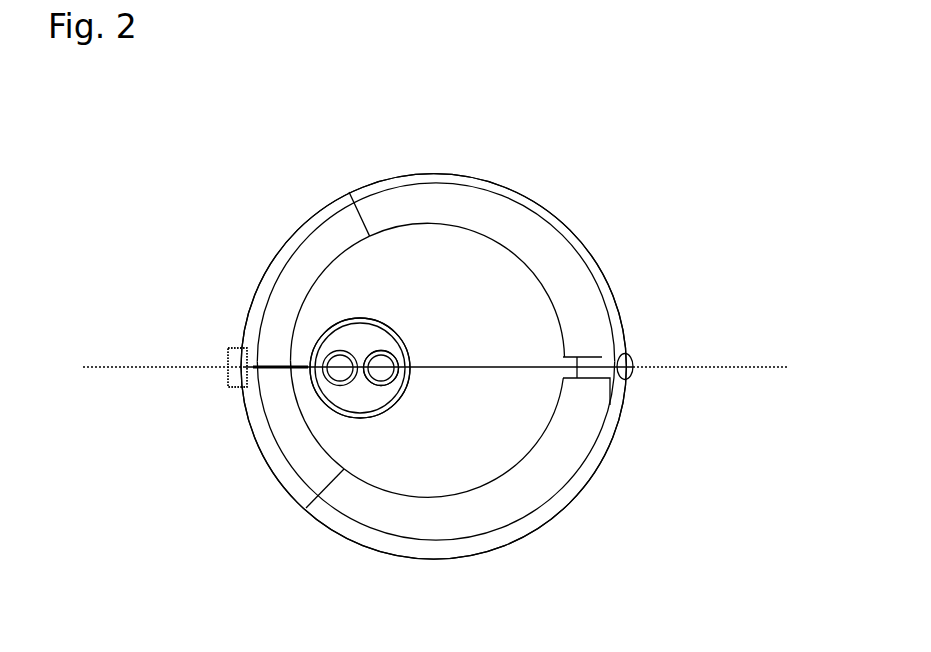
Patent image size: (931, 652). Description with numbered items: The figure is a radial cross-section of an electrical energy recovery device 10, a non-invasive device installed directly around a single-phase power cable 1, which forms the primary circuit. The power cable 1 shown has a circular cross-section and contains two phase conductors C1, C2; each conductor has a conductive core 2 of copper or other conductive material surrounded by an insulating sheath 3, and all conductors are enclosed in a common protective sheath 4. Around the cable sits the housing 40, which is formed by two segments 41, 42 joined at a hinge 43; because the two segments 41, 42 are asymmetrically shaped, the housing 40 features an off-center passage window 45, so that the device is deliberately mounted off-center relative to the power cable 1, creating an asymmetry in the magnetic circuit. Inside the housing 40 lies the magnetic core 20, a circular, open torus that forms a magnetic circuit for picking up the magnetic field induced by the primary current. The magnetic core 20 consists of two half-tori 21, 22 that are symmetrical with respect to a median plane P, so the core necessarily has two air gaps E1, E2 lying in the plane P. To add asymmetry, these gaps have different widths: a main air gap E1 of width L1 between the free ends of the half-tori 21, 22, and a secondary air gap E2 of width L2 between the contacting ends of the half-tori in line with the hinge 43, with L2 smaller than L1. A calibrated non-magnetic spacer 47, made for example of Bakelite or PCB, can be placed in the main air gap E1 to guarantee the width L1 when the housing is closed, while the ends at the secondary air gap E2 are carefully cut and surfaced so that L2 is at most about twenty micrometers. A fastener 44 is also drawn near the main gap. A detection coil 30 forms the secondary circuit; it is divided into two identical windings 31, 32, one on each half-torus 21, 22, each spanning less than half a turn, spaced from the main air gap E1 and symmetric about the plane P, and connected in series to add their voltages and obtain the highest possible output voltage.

The power cable 1 is at (393, 329).
The conductive core 2 is at (386, 372).
The insulating sheath 3 is at (397, 346).
The protective sheath 4 is at (357, 333).
The electrical energy recovery device 10 is at (596, 225).
The magnetic core 20 is at (274, 414).
The half-torus 21 is at (287, 288).
The half-torus 22 is at (287, 440).
The detection coil 30 is at (433, 356).
The winding 31 is at (351, 197).
The winding 32 is at (492, 518).
The housing 40 is at (541, 329).
The segment 41 is at (498, 270).
The segment 42 is at (543, 436).
The hinge 43 is at (633, 368).
The fastener 44 is at (228, 373).
The passage window 45 is at (262, 383).
The calibrated non-magnetic spacer 47 is at (262, 358).
The phase conductor C1 is at (330, 384).
The phase conductor C2 is at (376, 385).
The main air gap E1 is at (175, 351).
The width of main air gap L1 is at (190, 351).
The secondary air gap E2 is at (686, 350).
The width of secondary air gap L2 is at (608, 350).
The median plane P is at (443, 368).